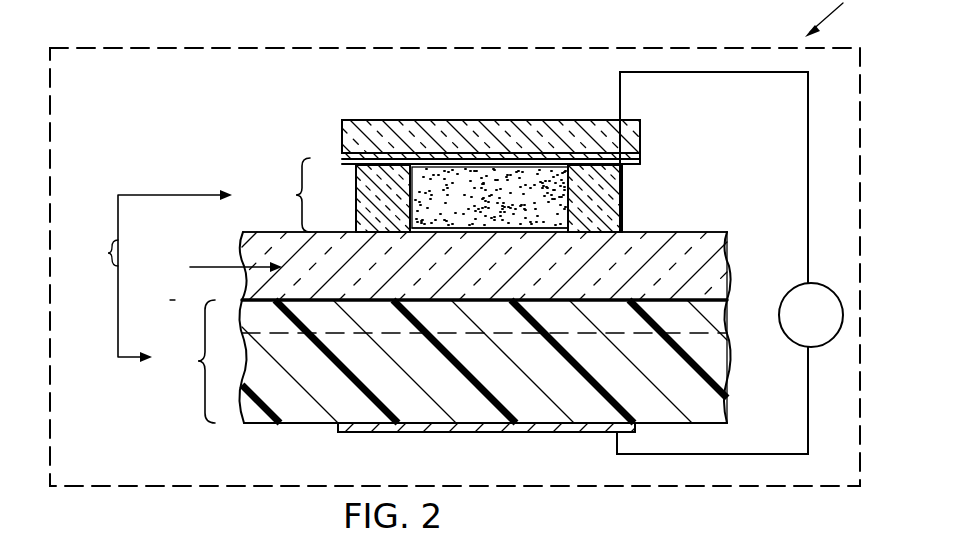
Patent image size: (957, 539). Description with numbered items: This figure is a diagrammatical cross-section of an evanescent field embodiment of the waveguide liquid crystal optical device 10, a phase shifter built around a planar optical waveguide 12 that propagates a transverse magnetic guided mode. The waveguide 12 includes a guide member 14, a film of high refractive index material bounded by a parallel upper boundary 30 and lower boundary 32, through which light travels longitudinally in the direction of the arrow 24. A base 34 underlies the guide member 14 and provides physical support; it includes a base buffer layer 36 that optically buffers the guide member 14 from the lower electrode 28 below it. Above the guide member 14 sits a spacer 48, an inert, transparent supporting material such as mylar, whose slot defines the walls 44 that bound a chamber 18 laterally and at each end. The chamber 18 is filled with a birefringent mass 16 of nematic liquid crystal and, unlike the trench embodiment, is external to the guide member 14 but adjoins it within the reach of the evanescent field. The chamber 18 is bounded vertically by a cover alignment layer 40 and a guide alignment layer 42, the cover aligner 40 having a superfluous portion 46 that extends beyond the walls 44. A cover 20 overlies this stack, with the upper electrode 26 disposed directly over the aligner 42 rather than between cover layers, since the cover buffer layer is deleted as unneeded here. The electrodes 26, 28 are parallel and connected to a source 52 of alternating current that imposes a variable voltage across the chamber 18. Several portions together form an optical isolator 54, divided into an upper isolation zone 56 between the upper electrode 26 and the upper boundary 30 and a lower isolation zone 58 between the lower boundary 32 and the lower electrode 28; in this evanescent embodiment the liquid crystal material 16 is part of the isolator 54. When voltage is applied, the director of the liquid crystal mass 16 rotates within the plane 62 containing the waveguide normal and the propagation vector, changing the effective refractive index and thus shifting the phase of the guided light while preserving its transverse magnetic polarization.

The waveguide optical device 10 is at (270, 536).
The optical waveguide 12 is at (824, 233).
The guide member 14 is at (742, 249).
The birefringent mass 16 is at (457, 175).
The chamber 18 is at (556, 197).
The cover 20 is at (342, 150).
The arrow indicating direction of light propagation 24 is at (190, 267).
The upper electrode 26 is at (356, 168).
The lower electrode 28 is at (552, 433).
The upper boundary 30 is at (718, 232).
The lower boundary 32 is at (727, 258).
The base 34 is at (280, 424).
The base buffer layer 36 is at (727, 300).
The cover alignment layer 40 is at (640, 148).
The guide alignment layer 42 is at (510, 233).
The walls 44 is at (562, 175).
The superfluous portion 46 is at (640, 165).
The spacer 48 is at (622, 213).
The source of alternating current 52 is at (826, 345).
The optical isolator 54 is at (153, 276).
The upper isolation zone 56 is at (284, 195).
The lower isolation zone 58 is at (185, 361).
The plane 62 is at (863, 133).